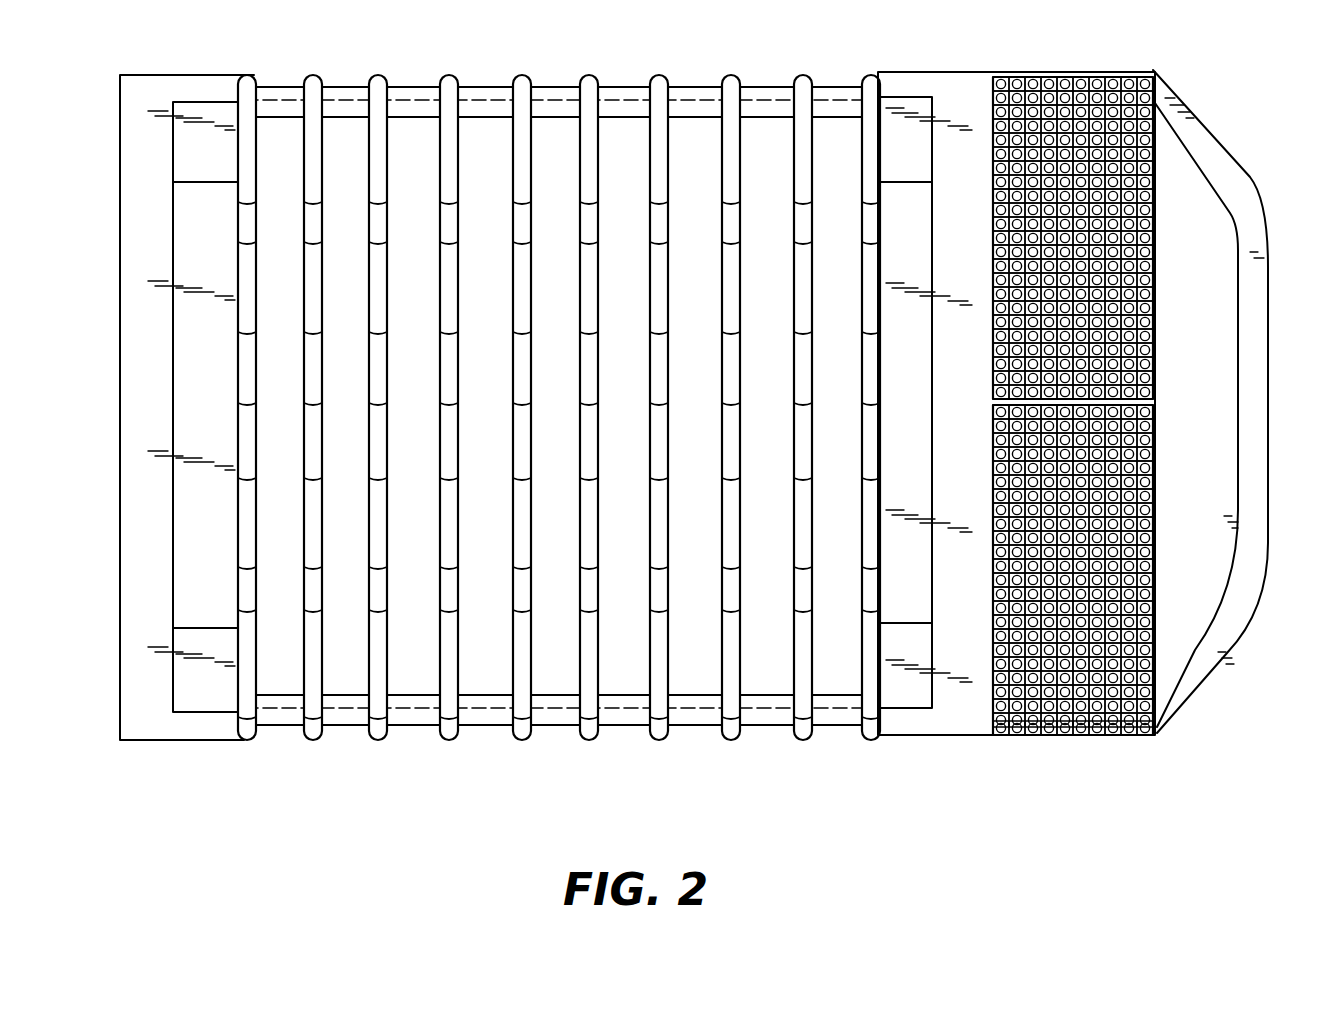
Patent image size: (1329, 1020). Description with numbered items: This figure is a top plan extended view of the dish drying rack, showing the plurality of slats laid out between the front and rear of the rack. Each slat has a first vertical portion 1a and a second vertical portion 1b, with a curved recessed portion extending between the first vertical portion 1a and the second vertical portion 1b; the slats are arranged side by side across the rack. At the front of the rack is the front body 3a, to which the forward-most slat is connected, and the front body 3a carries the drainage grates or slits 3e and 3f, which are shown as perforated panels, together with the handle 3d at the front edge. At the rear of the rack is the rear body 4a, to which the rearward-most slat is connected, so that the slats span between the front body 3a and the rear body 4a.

The first vertical portion 1a is at (380, 733).
The second vertical portion 1b is at (377, 83).
The front body 3a is at (970, 705).
The handle 3d is at (1240, 185).
The drainage grate/slit 3e is at (1098, 697).
The drainage grate/slit 3f is at (1075, 100).
The rear body 4a is at (160, 92).